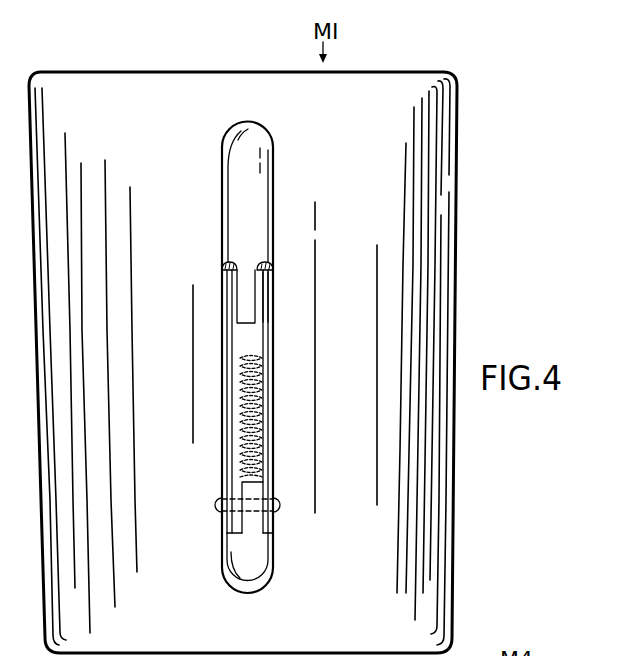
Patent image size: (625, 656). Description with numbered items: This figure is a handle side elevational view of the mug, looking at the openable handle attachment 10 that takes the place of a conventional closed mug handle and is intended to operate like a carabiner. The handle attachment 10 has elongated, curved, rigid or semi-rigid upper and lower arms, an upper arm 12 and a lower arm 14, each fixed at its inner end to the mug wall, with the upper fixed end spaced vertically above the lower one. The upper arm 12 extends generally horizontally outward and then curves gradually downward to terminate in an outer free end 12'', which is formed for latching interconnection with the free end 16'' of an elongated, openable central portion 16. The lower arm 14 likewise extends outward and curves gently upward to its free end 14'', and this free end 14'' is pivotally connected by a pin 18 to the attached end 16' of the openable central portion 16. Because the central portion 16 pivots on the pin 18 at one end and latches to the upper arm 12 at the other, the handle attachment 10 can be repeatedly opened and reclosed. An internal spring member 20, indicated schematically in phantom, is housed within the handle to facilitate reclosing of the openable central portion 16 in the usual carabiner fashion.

The openable handle attachment 10 is at (327, 224).
The upper arm 12 is at (216, 358).
The outer free end of upper arm 12'' is at (209, 282).
The lower arm 14 is at (284, 567).
The outer free end of lower arm 14'' is at (310, 487).
The openable central portion 16 is at (215, 397).
The attached end of openable center portion 16' is at (215, 536).
The free end of openable center portion 16'' is at (317, 297).
The pin 18 is at (280, 509).
The internal spring member 20 is at (258, 378).